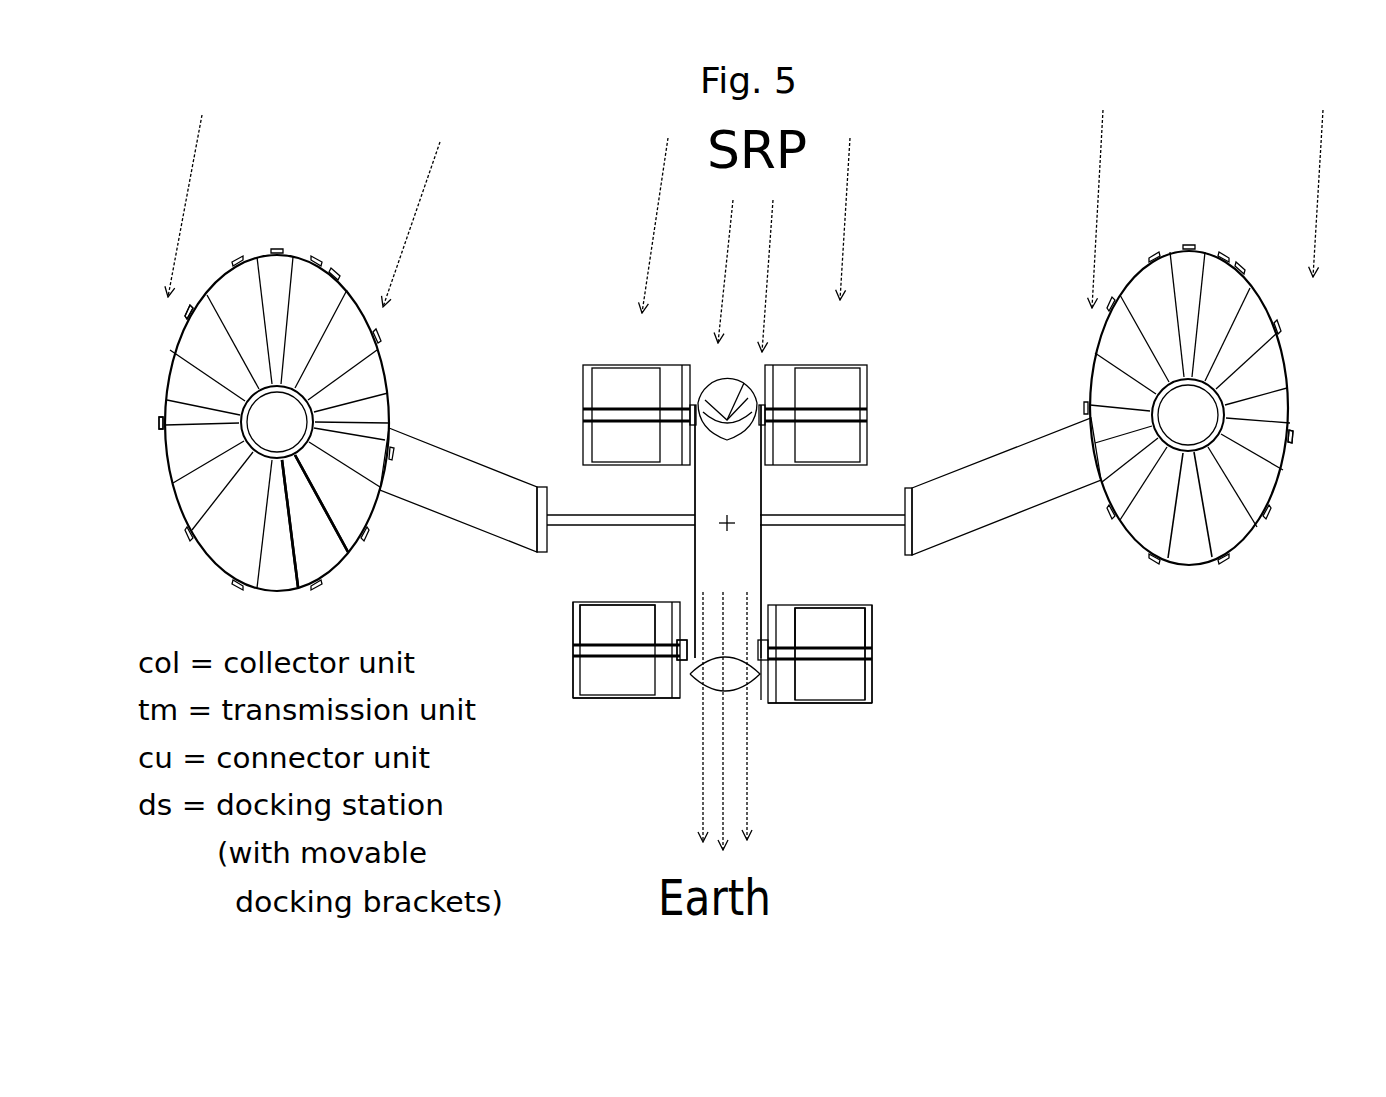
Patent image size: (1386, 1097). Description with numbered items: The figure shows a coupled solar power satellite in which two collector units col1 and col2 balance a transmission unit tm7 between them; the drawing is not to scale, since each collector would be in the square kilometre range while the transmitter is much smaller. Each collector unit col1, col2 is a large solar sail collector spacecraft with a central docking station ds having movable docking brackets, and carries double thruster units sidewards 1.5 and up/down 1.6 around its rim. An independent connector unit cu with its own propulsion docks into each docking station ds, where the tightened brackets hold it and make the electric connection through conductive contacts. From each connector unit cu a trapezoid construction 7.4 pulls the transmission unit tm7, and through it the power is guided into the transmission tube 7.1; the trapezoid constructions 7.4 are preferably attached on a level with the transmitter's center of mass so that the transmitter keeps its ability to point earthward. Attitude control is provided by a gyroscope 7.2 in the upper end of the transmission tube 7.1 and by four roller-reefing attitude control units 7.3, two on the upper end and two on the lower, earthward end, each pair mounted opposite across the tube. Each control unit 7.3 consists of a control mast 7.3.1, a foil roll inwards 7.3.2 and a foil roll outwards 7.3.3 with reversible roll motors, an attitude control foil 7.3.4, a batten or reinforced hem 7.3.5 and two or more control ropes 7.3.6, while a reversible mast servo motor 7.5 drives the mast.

The collector unit col1 is at (263, 232).
The collector unit col2 is at (1187, 237).
The transmission unit tm7 is at (781, 480).
The connector unit cu is at (292, 400).
The docking station ds is at (260, 457).
The double thruster unit sidewards 1.5 is at (128, 356).
The double thruster unit up/down 1.6 is at (163, 356).
The transmission tube 7.1 is at (689, 500).
The gyroscope 7.2 is at (745, 393).
The roller-reefing attitude control unit 7.3 is at (567, 418).
The control mast 7.3.1 is at (618, 652).
The foil roll inwards 7.3.2 is at (763, 603).
The foil roll outwards 7.3.3 is at (568, 637).
The attitude control foil 7.3.4 is at (817, 637).
The batten/bar or reinforced hem 7.3.5 is at (647, 622).
The control ropes 7.3.6 is at (612, 698).
The trapezoid construction 7.4 is at (533, 525).
The mast servo motor 7.5 is at (686, 700).